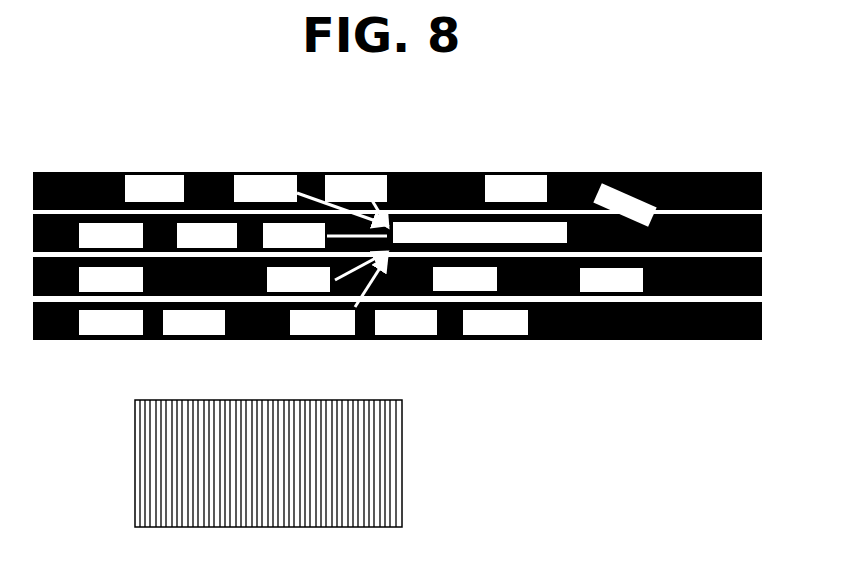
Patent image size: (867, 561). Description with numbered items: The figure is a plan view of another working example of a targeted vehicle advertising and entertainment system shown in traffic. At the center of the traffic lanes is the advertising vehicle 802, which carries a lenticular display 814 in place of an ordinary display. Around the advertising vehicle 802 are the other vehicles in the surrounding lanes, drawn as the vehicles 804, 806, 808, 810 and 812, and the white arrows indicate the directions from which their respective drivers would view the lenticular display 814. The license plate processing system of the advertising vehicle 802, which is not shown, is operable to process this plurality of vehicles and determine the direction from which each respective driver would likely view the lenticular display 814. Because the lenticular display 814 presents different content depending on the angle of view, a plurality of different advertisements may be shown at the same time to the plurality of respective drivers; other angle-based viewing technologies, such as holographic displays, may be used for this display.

The advertising vehicle 802 is at (465, 218).
The lower adjacent element 804 is at (273, 288).
The left adjacent element 806 is at (263, 230).
The upper left adjacent element 808 is at (268, 178).
The upper adjacent element 810 is at (365, 196).
The lower right adjacent element 812 is at (320, 327).
The lenticular display 814 is at (135, 448).